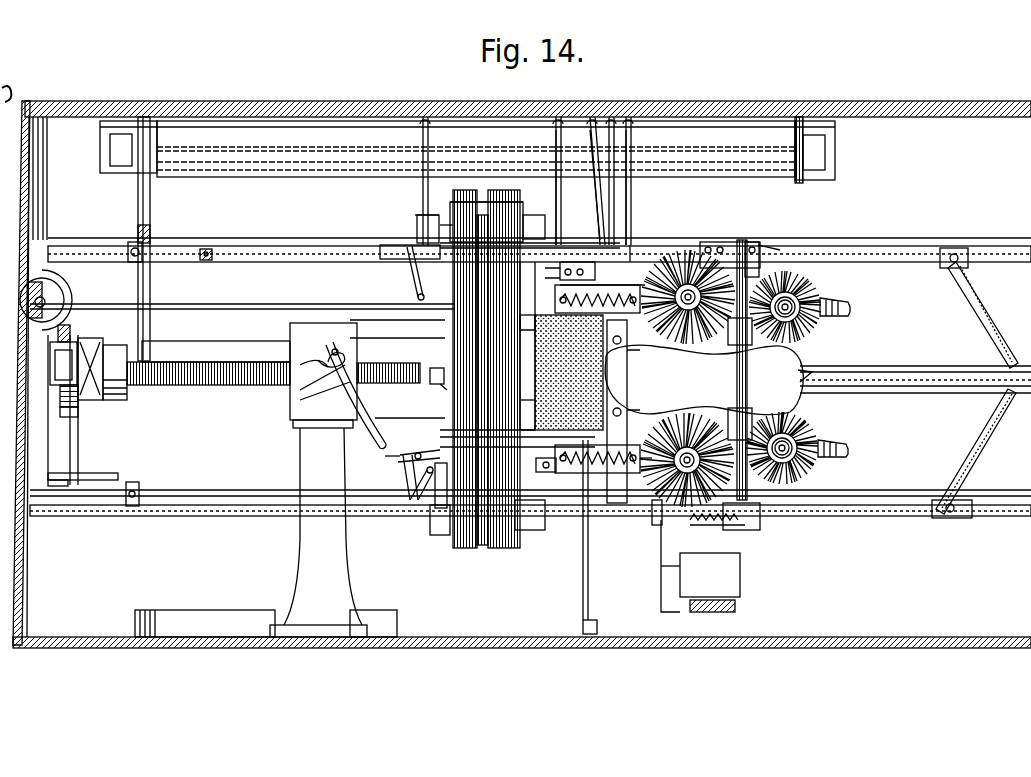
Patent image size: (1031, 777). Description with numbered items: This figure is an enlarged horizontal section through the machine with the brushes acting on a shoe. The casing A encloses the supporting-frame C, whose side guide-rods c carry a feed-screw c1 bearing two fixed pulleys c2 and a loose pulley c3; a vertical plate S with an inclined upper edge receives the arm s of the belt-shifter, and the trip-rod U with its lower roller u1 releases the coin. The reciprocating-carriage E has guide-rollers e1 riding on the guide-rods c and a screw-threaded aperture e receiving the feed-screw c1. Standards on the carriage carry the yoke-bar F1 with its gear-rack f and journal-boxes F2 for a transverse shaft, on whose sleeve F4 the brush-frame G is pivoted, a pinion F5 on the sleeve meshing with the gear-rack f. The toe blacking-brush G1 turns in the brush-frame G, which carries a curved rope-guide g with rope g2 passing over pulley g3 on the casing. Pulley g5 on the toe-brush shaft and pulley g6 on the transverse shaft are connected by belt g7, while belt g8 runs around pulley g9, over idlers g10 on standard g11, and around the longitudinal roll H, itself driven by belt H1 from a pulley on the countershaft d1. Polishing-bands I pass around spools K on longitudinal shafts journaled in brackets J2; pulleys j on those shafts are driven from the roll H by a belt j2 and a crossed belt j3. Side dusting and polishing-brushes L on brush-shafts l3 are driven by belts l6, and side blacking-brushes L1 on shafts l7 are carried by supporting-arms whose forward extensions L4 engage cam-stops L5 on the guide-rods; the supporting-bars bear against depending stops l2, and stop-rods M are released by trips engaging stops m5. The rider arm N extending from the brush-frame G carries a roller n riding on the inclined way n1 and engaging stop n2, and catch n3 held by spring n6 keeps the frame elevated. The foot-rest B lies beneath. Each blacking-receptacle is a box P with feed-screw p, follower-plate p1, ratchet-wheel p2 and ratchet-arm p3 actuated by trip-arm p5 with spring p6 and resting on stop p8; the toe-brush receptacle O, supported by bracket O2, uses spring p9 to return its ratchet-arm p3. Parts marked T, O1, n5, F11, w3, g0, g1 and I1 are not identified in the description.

The casing A is at (358, 107).
The longitudinal roll H is at (467, 150).
The belt H1 is at (150, 212).
The pulley j is at (417, 224).
The belt j2 is at (556, 145).
The crossed belt j3 is at (423, 200).
The belt g8 is at (590, 140).
The belts l6 is at (631, 150).
The pulley g6 is at (572, 240).
The feed-screw c1 is at (250, 256).
The trip-rod U is at (207, 249).
The roller u1 is at (210, 252).
The stop m5 is at (130, 262).
The rope or wire g2 is at (242, 297).
The pulley g3 is at (50, 300).
The side guide-rods c is at (50, 352).
The pulleys c2 is at (115, 345).
The third pulley c3 is at (85, 398).
The countershaft d1 is at (70, 328).
The vertical plate S is at (83, 410).
The rod T is at (78, 458).
The arm s is at (118, 478).
The rack / box O1 is at (433, 466).
The supporting-frame C is at (262, 492).
The blacking-receptacle O is at (323, 371).
The bracket O2 is at (318, 528).
The feed-screw p is at (743, 610).
The follower-plate p1 is at (300, 392).
The ratchet-wheel p2 is at (740, 626).
The ratchet-arm p3 is at (660, 575).
The trip-arm p5 is at (714, 531).
The spring p6 is at (708, 537).
The stop p8 is at (690, 605).
The spring p9 is at (302, 404).
The roller n is at (583, 626).
The inclined guide or way n1 is at (266, 607).
The stop n2 is at (435, 490).
The catch n3 is at (400, 462).
The pivot n5 is at (373, 472).
The spring n6 is at (410, 500).
The rider arm N is at (590, 562).
The yoke-bar F1 is at (410, 270).
The journal-box F2 is at (432, 520).
The sleeve F4 is at (420, 418).
The pinion F5 is at (440, 372).
The bar F11 is at (397, 330).
The gear-rack f is at (432, 384).
The bar w3 is at (388, 256).
The bar g0 is at (438, 440).
The spools K is at (445, 555).
The polishing-bands I is at (483, 548).
The pulley g9 is at (440, 232).
The brackets J2 is at (535, 215).
The curved rope-guide g is at (488, 298).
The bar g1 is at (562, 274).
The idlers g10 is at (595, 242).
The standard g11 is at (595, 262).
The stop-rods M is at (605, 318).
The brush-frame G is at (520, 330).
The belt g7 is at (520, 405).
The toe blacking-brush G1 is at (617, 411).
The pulley g5 is at (641, 380).
The foot-rest B is at (708, 380).
The depending stops l2 is at (757, 350).
The side blacking-brushes L1 is at (705, 243).
The guide-rollers e1 is at (752, 248).
The vertical shaft l7 is at (760, 255).
The side dusting and polishing brushes L is at (815, 300).
The forward extension L4 is at (850, 308).
The brush-shaft l3 is at (800, 320).
The reciprocating-carriage E is at (770, 520).
The cam-stops L5 is at (1000, 345).
The box P is at (740, 560).
The plate I1 is at (651, 521).
The screw-threaded aperture e is at (648, 510).